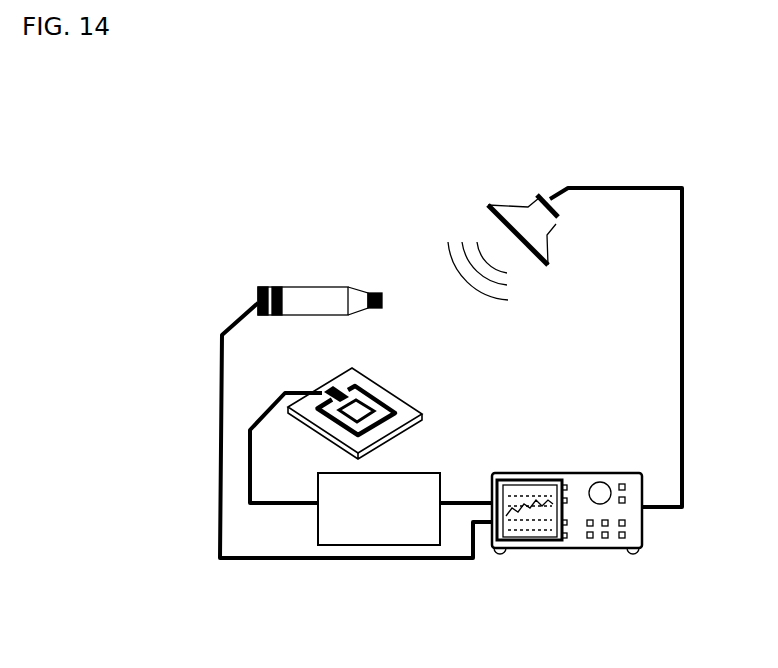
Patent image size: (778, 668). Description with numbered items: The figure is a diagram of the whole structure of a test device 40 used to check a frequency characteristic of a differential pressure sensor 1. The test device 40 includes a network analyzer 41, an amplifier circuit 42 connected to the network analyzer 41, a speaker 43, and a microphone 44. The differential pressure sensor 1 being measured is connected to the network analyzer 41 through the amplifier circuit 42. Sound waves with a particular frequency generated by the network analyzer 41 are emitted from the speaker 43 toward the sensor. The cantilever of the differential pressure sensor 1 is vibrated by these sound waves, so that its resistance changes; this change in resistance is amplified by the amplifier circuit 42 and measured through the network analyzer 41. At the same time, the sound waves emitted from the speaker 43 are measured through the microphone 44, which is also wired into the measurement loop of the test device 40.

The test device 40 is at (640, 124).
The speaker 43 is at (545, 233).
The microphone 44 is at (313, 309).
The differential pressure sensor 1 is at (403, 352).
The amplifier circuit 42 is at (372, 546).
The network analyzer 41 is at (565, 549).